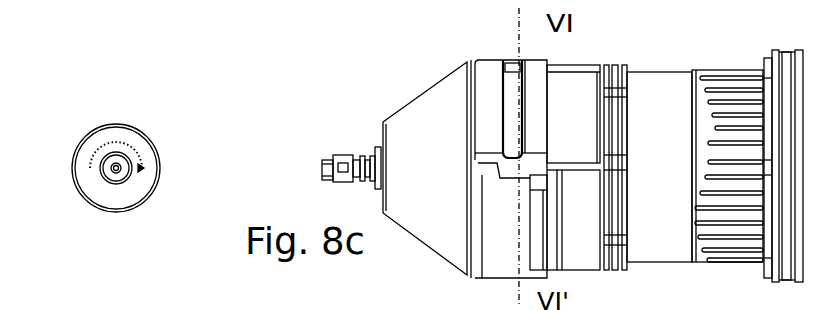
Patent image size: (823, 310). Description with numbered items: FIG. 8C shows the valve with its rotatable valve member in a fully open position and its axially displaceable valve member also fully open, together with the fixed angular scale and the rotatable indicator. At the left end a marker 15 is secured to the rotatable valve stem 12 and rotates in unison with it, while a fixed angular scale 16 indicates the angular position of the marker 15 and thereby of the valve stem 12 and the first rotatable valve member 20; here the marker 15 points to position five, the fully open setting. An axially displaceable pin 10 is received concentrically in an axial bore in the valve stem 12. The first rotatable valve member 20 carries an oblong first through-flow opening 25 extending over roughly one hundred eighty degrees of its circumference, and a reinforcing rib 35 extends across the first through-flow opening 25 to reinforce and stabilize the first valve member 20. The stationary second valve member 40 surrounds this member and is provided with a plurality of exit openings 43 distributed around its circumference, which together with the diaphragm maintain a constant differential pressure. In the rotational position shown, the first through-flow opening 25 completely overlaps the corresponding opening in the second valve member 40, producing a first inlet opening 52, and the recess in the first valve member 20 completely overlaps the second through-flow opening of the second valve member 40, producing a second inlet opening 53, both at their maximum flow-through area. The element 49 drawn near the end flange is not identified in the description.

The dial hub / rotary selector 10 is at (117, 160).
The nozzle / connector fitting 12 is at (100, 185).
The dial outer ring 15 is at (157, 192).
The dial scale markings 16 is at (132, 200).
The conical housing section 20 is at (415, 125).
The housing element 25 is at (252, 304).
The housing element 35 is at (202, 302).
The cylindrical body 40 is at (643, 80).
The ribbed grip section 43 is at (730, 88).
The end flange 49 is at (702, 304).
The guide slot 52 is at (512, 93).
The lower guide slot 53 is at (538, 245).